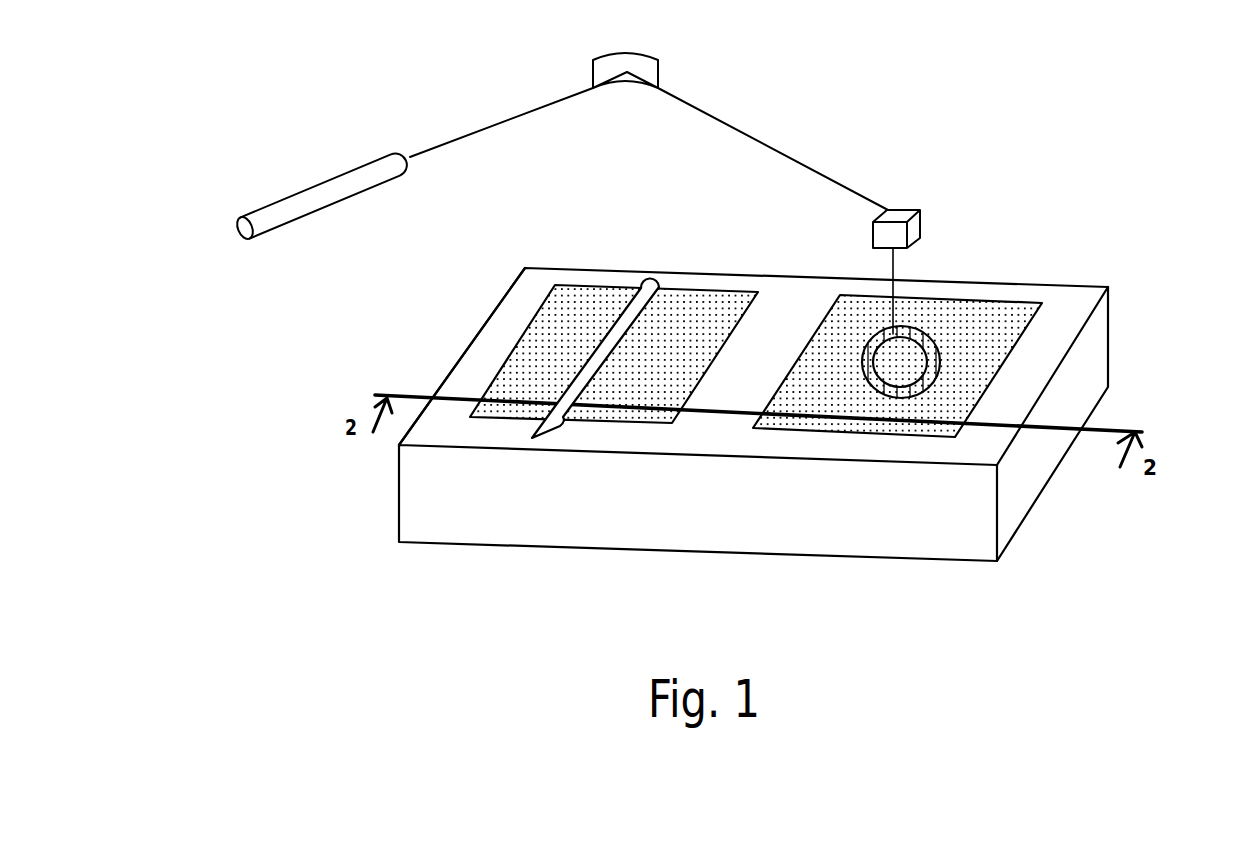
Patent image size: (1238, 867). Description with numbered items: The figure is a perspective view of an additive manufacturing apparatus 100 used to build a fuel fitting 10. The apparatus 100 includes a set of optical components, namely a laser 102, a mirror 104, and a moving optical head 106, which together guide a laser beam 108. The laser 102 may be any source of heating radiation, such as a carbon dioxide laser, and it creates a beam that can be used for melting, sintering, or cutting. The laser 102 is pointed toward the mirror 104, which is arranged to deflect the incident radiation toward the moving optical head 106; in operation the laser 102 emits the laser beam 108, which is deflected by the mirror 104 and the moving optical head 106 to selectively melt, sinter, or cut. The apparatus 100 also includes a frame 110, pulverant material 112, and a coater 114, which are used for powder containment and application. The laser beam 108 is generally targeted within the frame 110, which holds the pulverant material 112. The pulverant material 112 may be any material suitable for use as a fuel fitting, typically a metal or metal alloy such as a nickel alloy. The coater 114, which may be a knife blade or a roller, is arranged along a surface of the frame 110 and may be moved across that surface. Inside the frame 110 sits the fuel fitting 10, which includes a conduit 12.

The additive manufacturing apparatus 100 is at (1113, 195).
The laser 102 is at (288, 212).
The mirror 104 is at (630, 62).
The moving optical head 106 is at (902, 217).
The laser beam 108 is at (477, 133).
The frame 110 is at (498, 433).
The pulverant material 112 is at (630, 415).
The coater 114 is at (647, 288).
The fuel fitting 10 is at (933, 463).
The conduit 12 is at (902, 361).